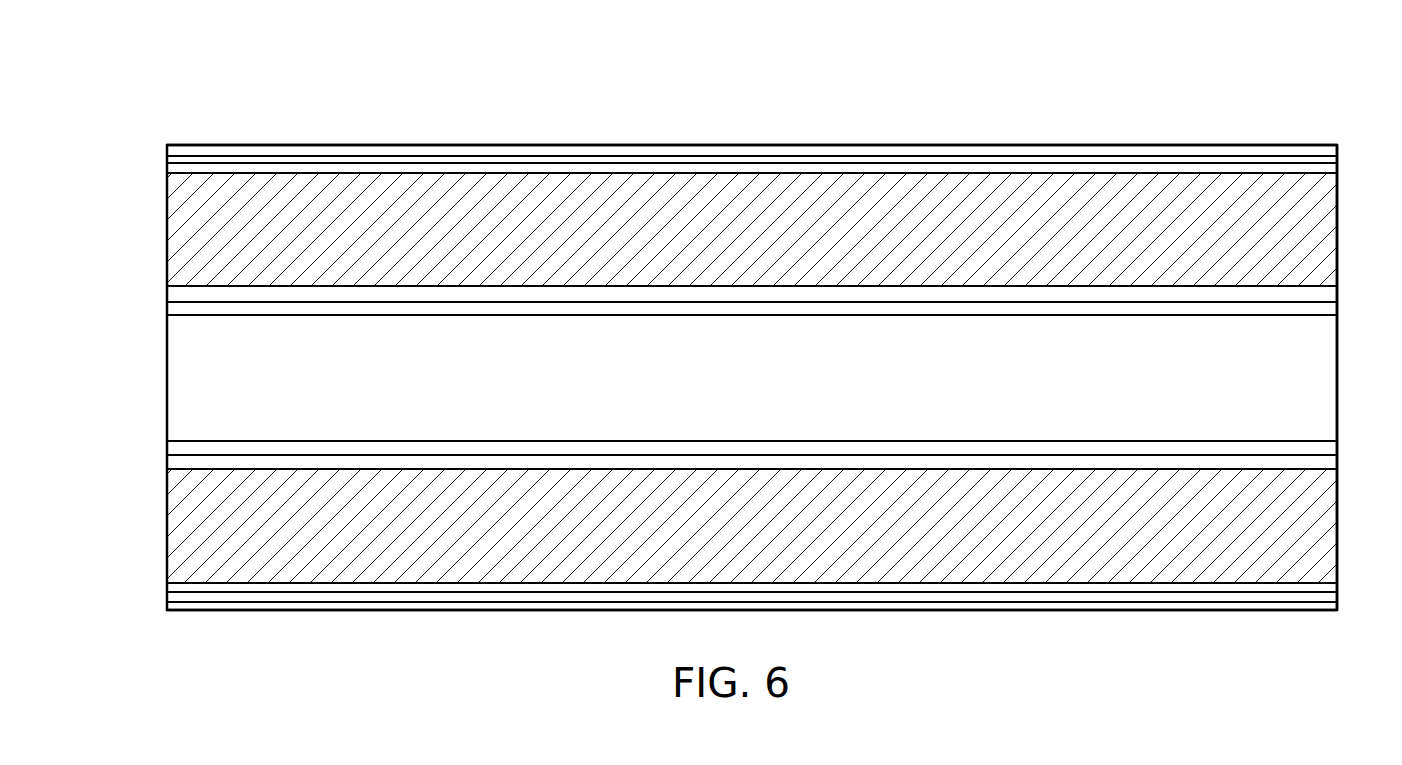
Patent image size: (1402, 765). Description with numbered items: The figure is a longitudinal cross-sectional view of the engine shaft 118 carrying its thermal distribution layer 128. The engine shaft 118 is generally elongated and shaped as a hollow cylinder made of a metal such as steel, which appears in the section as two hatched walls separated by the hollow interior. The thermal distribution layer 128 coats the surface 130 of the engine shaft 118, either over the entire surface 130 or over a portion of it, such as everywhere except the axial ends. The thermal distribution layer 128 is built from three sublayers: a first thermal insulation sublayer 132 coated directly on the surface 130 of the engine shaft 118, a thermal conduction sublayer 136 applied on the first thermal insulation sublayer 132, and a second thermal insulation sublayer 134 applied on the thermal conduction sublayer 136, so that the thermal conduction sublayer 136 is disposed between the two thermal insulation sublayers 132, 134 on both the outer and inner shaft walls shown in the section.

The engine shaft 118 is at (556, 185).
The thermal distribution layer 128 is at (1339, 141).
The surface 130 is at (748, 166).
The first thermal insulation sublayer 132 is at (450, 169).
The second thermal insulation sublayer 134 is at (843, 145).
The thermal conduction sublayer 136 is at (640, 151).